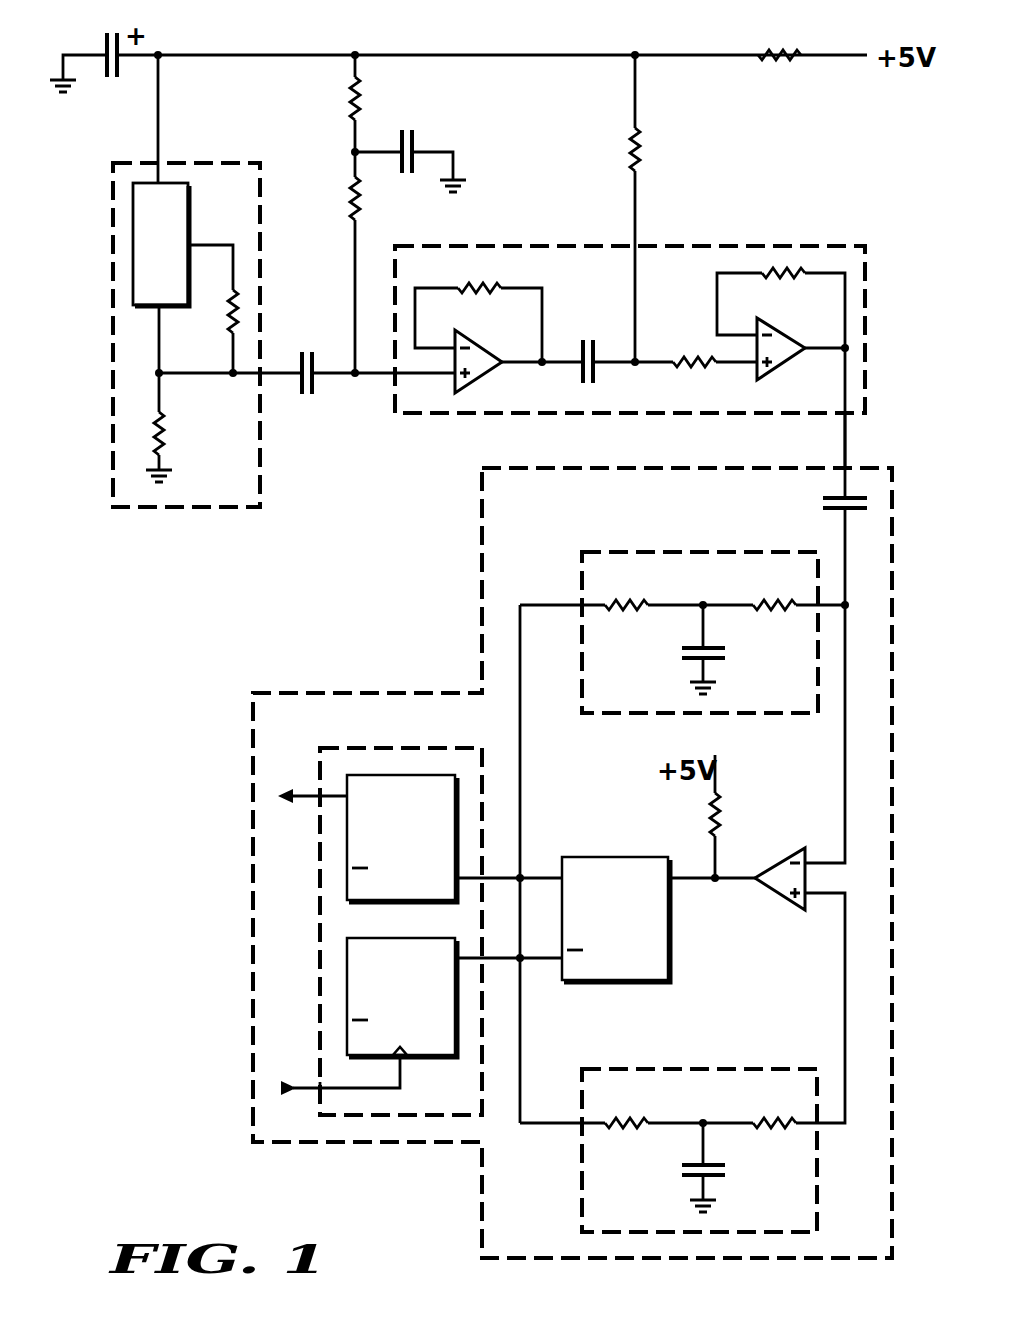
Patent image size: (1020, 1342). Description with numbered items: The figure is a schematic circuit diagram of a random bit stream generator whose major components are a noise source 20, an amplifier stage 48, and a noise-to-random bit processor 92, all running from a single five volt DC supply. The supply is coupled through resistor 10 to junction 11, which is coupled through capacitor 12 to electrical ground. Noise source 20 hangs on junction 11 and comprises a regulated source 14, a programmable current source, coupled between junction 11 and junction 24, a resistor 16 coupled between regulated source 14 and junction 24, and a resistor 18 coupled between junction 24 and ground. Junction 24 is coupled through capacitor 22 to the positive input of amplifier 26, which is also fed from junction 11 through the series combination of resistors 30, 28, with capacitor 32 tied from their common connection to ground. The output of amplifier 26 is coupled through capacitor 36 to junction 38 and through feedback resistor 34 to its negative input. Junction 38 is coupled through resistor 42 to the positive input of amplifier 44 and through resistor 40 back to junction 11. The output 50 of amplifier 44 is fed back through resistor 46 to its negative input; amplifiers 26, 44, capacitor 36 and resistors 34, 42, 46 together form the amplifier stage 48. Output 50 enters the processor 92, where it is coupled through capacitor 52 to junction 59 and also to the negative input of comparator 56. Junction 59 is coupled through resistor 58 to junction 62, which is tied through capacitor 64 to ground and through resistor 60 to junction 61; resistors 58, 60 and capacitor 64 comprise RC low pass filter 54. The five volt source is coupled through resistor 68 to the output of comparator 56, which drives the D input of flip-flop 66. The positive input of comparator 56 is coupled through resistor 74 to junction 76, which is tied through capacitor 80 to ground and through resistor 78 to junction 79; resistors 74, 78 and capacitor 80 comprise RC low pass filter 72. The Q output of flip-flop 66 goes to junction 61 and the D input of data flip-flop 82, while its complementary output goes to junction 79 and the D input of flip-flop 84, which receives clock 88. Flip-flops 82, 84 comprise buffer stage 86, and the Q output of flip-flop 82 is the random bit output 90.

The resistor 10 is at (785, 64).
The junction 11 is at (357, 52).
The capacitor 12 is at (103, 40).
The regulated source 14 is at (190, 212).
The resistor 16 is at (228, 315).
The resistor 18 is at (165, 432).
The noise source 20 is at (236, 509).
The capacitor 22 is at (308, 398).
The junction 24 is at (155, 377).
The amplifier 26 is at (485, 378).
The resistor 28 is at (348, 200).
The resistor 30 is at (348, 105).
The capacitor 32 is at (418, 140).
The feedback resistor 34 is at (485, 295).
The capacitor 36 is at (590, 340).
The junction 38 is at (635, 368).
The resistor 40 is at (642, 148).
The resistor 42 is at (696, 355).
The amplifier 44 is at (785, 365).
The resistor 46 is at (785, 282).
The amplifier stage 48 is at (815, 246).
The output 50 is at (843, 438).
The capacitor 52 is at (820, 503).
The RC low pass filter 54 is at (630, 551).
The comparator 56 is at (778, 898).
The resistor 58 is at (775, 618).
The junction 59 is at (848, 604).
The resistor 60 is at (625, 618).
The junction 61 is at (521, 897).
The junction 62 is at (703, 602).
The capacitor 64 is at (727, 656).
The flip-flop 66 is at (607, 856).
The resistor 68 is at (725, 812).
The RC low pass filter 72 is at (772, 1068).
The resistor 74 is at (775, 1135).
The junction 76 is at (703, 1120).
The resistor 78 is at (625, 1135).
The junction 79 is at (527, 941).
The capacitor 80 is at (727, 1175).
The data flip-flop 82 is at (402, 838).
The flip-flop 84 is at (430, 1058).
The buffer stage 86 is at (415, 748).
The clock 88 is at (305, 1087).
The random bit output 90 is at (305, 795).
The noise-to-random bit processor 92 is at (482, 572).